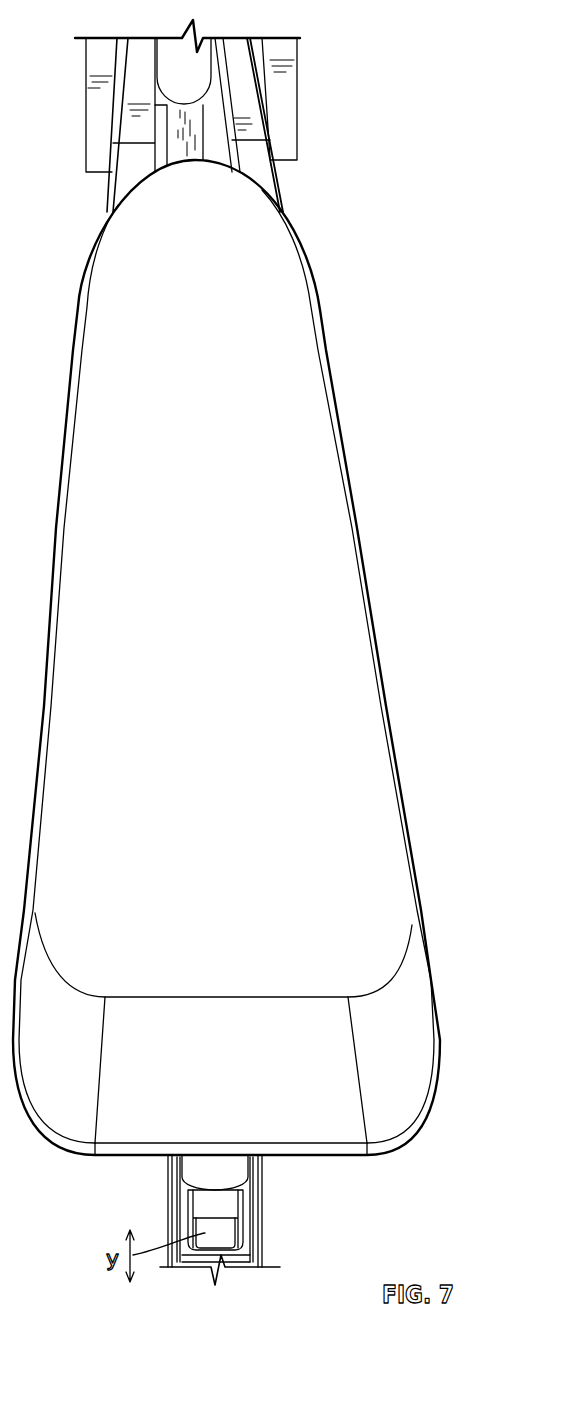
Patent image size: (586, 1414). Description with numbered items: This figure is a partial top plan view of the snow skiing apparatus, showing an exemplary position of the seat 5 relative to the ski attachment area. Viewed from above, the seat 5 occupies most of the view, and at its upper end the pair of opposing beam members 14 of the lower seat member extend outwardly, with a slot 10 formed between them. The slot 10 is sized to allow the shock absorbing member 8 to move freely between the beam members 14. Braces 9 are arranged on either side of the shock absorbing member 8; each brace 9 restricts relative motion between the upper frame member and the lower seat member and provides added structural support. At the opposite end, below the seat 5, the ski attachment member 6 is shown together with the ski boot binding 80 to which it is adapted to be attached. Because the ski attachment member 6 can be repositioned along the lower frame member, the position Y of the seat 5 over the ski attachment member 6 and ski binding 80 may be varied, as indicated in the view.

The seat 5 is at (368, 826).
The ski attachment member 6 is at (202, 1170).
The shock absorbing member 8 is at (197, 78).
The brace 9 is at (101, 62).
The slot 10 is at (213, 152).
The beam member 14 is at (132, 170).
The ski boot binding 80 is at (242, 1225).